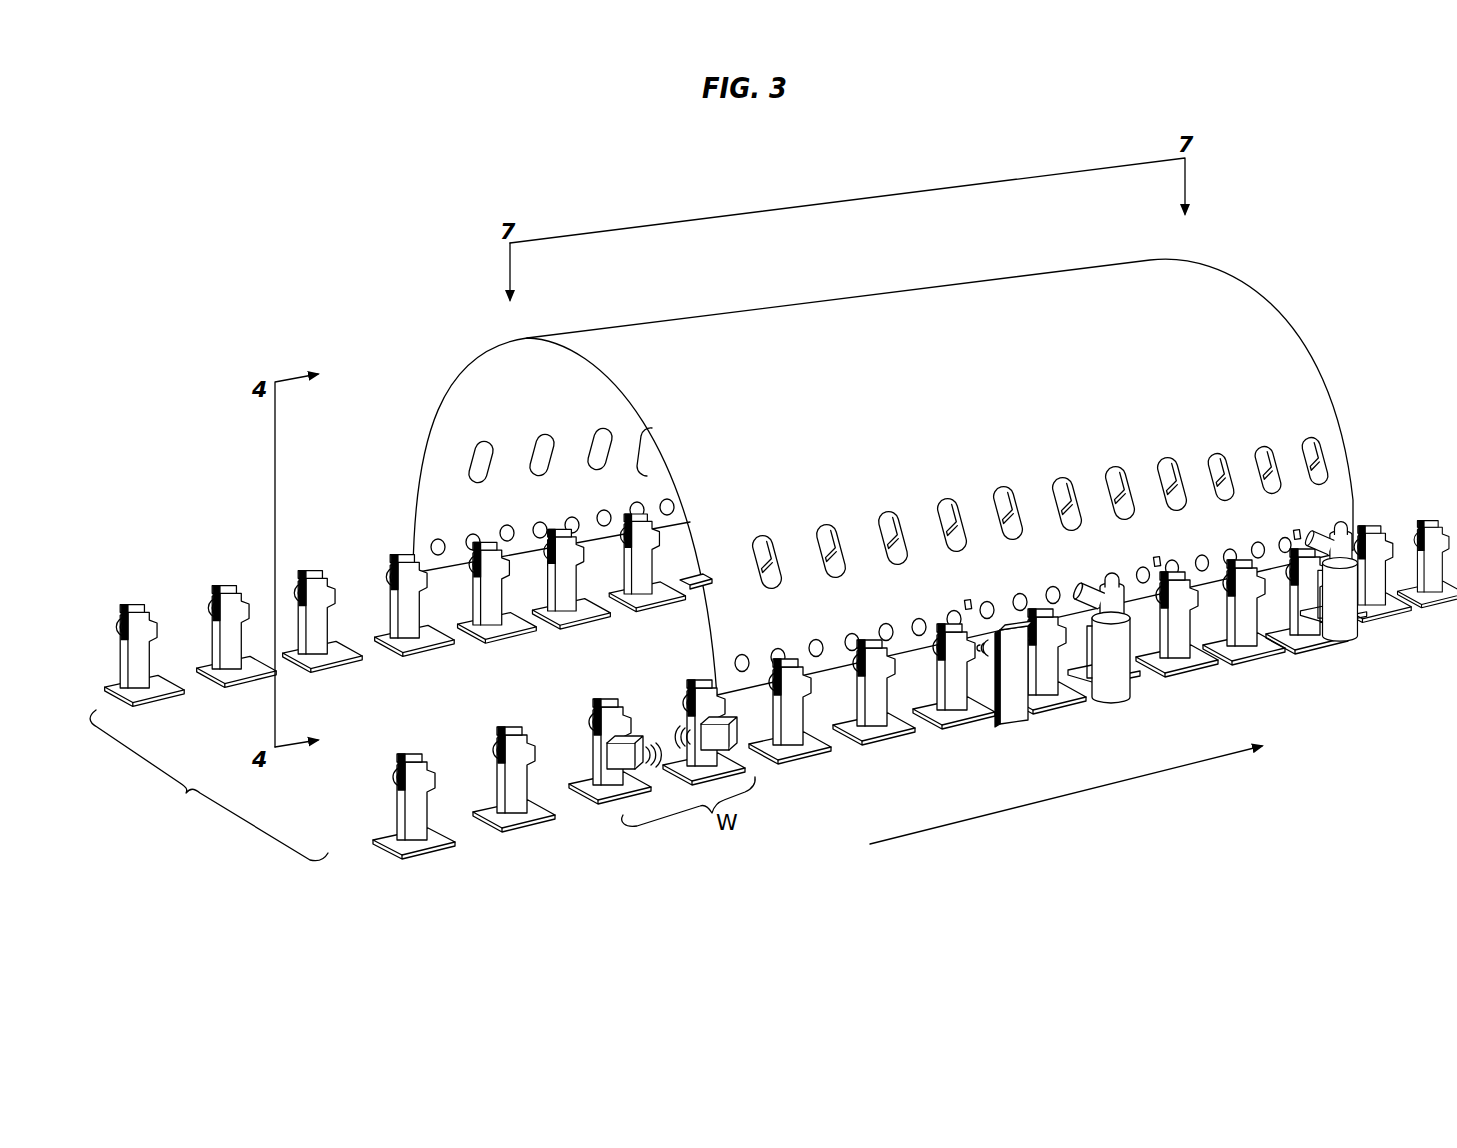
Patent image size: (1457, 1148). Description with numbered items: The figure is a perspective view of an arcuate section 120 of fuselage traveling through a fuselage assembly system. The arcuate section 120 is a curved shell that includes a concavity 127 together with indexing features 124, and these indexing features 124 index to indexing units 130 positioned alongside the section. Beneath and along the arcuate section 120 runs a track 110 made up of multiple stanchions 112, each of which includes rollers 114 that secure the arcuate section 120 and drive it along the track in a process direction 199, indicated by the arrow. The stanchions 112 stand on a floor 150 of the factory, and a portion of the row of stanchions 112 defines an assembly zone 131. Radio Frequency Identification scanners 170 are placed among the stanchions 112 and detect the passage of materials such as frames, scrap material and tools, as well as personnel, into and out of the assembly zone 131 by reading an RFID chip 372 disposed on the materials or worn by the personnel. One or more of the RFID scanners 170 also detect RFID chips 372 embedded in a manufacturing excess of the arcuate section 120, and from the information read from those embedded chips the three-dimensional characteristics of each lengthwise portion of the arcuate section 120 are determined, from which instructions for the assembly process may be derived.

The track 110 is at (781, 723).
The stanchion 112 is at (384, 851).
The rollers 114 is at (428, 762).
The arcuate section 120 is at (1246, 305).
The indexing features 124 is at (810, 640).
The concavity 127 is at (510, 500).
The indexing units 130 is at (1122, 686).
The assembly zone 131 is at (209, 785).
The floor 150 is at (396, 720).
The RFID scanners 170 is at (610, 756).
The process direction 199 is at (955, 822).
The RFID chip 372 is at (964, 604).